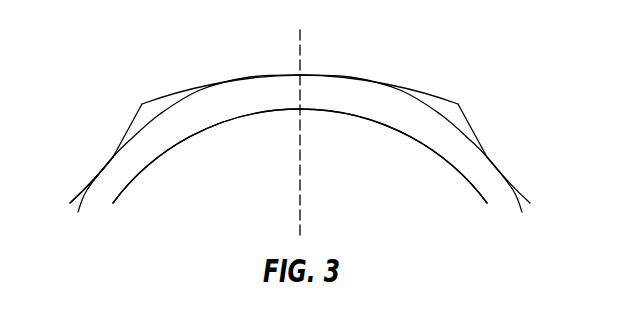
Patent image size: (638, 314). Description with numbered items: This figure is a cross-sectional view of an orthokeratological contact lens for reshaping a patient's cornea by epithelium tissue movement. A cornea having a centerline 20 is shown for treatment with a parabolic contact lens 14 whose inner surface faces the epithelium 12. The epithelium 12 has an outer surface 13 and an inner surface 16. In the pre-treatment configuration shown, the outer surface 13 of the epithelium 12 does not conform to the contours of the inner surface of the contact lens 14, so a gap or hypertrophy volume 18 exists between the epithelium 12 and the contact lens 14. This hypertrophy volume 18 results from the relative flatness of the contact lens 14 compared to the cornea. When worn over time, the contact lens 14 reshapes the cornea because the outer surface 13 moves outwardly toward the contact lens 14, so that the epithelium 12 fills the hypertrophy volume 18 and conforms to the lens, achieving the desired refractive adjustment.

The epithelium 12 is at (417, 122).
The outer surface 13 is at (125, 142).
The parabolic contact lens 14 is at (443, 98).
The inner surface 16 is at (202, 132).
The hypertrophy volume 18 is at (147, 112).
The centerline 20 is at (302, 52).